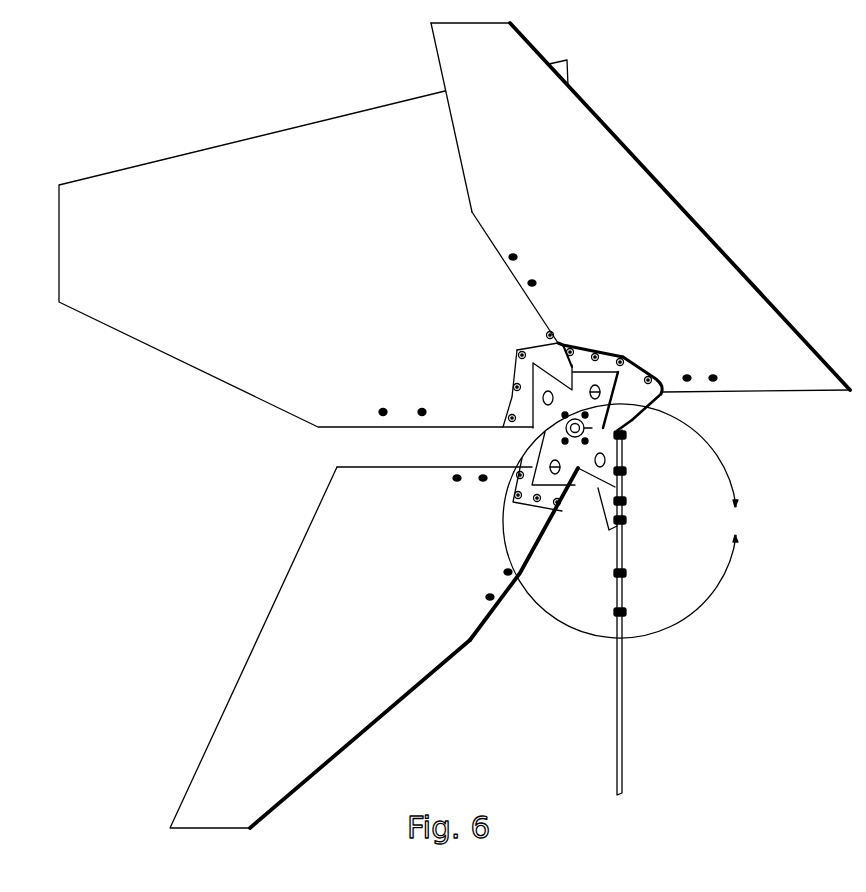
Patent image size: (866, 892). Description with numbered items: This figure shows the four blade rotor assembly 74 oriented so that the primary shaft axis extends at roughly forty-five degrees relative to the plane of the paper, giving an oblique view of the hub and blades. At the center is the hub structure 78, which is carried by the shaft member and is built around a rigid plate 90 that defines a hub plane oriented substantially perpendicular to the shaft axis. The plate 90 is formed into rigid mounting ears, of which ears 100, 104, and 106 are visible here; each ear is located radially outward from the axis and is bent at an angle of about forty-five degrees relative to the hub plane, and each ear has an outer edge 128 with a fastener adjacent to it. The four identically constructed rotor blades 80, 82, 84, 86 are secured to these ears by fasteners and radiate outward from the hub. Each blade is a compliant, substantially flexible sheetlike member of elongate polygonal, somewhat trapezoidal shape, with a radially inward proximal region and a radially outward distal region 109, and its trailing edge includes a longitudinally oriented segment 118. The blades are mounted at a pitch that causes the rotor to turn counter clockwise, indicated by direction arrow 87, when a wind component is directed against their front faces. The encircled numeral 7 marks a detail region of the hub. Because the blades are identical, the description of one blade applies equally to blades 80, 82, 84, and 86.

The rotor assembly 74 is at (178, 480).
The rotor blade 80 is at (816, 328).
The rotor blade 82 is at (212, 384).
The rotor blade 86 is at (336, 647).
The direction arrow 87 is at (281, 441).
The longitudinal segment of trailing edge 118 is at (492, 245).
The distal region 109 is at (225, 782).
The mounting ear 106 is at (584, 382).
The mounting ear 104 is at (548, 497).
The outer edge of rigid ear 128 is at (612, 352).
The mounting ear 100 is at (627, 380).
The rigid plate 90 is at (640, 402).
The hub structure 78 is at (634, 425).
The rotor blade 84 is at (604, 751).
The view circle for FIG. 7 is at (622, 521).